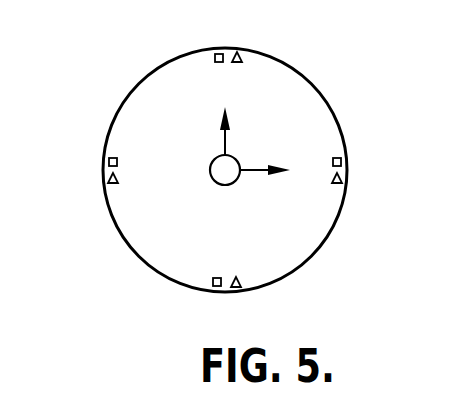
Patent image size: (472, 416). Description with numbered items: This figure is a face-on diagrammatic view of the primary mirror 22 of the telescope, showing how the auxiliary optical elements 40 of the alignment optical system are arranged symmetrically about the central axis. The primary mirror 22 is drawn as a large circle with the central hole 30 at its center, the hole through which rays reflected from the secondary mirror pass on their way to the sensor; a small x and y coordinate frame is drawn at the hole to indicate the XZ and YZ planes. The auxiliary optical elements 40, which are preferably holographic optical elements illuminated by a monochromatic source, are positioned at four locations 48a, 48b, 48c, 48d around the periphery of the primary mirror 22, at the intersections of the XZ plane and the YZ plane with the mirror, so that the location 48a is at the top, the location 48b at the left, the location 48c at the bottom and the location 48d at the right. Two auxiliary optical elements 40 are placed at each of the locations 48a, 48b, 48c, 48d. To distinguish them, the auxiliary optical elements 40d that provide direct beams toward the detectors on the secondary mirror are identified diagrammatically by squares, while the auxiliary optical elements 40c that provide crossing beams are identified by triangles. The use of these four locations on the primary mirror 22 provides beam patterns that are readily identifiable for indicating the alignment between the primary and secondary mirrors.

The primary mirror 22 is at (338, 113).
The central hole 30 is at (214, 181).
The auxiliary optical elements 40 is at (90, 148).
The auxiliary optical elements providing crossing beams 40c is at (244, 58).
The auxiliary optical elements providing direct beams 40d is at (212, 53).
The location 48a is at (236, 39).
The location 48b is at (80, 153).
The location 48c is at (229, 288).
The location 48d is at (344, 170).